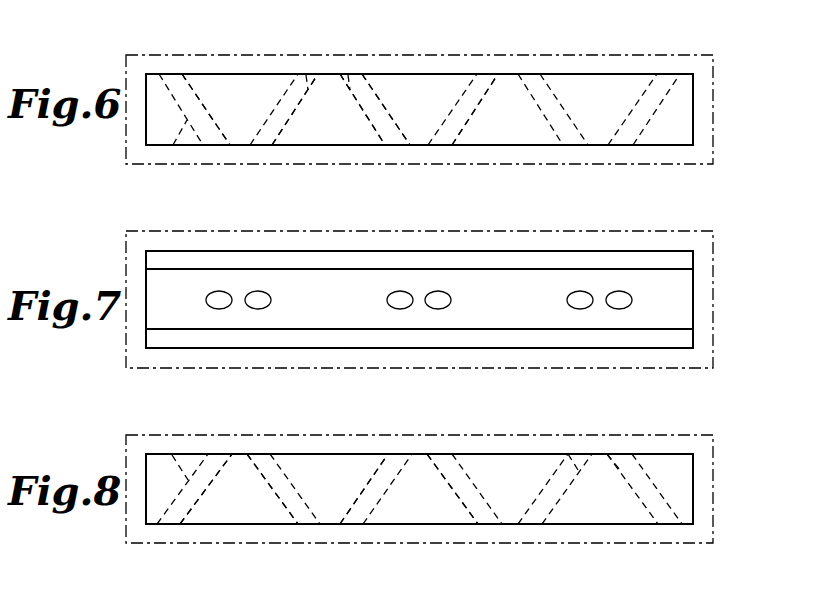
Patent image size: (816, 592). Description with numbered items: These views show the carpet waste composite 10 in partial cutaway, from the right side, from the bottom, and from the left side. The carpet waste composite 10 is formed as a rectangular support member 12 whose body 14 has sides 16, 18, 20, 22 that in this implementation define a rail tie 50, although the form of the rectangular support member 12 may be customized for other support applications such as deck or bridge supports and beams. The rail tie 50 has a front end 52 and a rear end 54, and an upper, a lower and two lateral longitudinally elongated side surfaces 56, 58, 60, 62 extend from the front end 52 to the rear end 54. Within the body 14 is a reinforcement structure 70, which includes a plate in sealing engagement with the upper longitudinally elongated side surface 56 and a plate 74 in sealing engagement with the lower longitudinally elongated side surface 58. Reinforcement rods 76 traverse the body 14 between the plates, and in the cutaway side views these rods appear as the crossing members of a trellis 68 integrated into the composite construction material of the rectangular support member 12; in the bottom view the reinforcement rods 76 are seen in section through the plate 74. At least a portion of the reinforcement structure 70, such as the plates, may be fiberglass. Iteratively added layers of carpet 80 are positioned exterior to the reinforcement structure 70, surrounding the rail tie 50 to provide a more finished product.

In FIG. 6, the carpet waste composite 10 is at (135, 48).
In FIG. 7, the carpet waste composite 10 is at (135, 225).
In FIG. 8, the carpet waste composite 10 is at (135, 428).
In FIG. 6, the rectangular support member 12 is at (698, 133).
In FIG. 7, the rectangular support member 12 is at (698, 318).
In FIG. 8, the rectangular support member 12 is at (698, 512).
In FIG. 6, the body 14 is at (146, 113).
In FIG. 7, the body 14 is at (146, 318).
In FIG. 8, the body 14 is at (146, 495).
In FIG. 6, the side 16 is at (494, 74).
In FIG. 8, the side 16 is at (262, 524).
In FIG. 7, the side 18 is at (567, 250).
In FIG. 8, the side 18 is at (205, 513).
In FIG. 6, the side 20 is at (291, 146).
In FIG. 7, the side 20 is at (363, 315).
In FIG. 8, the side 20 is at (345, 454).
In FIG. 6, the side 22 is at (447, 74).
In FIG. 7, the side 22 is at (350, 250).
In FIG. 6, the rail tie 50 is at (250, 72).
In FIG. 7, the rail tie 50 is at (430, 249).
In FIG. 8, the rail tie 50 is at (247, 452).
In FIG. 6, the front end 52 is at (695, 90).
In FIG. 7, the front end 52 is at (695, 278).
In FIG. 8, the front end 52 is at (695, 470).
In FIG. 6, the rear end 54 is at (146, 80).
In FIG. 7, the rear end 54 is at (146, 282).
In FIG. 8, the rear end 54 is at (146, 460).
In FIG. 6, the upper longitudinally elongated side surface 56 is at (507, 74).
In FIG. 8, the upper longitudinally elongated side surface 56 is at (313, 520).
In FIG. 6, the lower longitudinally elongated side surface 58 is at (240, 146).
In FIG. 7, the lower longitudinally elongated side surface 58 is at (378, 280).
In FIG. 8, the lower longitudinally elongated side surface 58 is at (420, 454).
In FIG. 7, the lateral longitudinally elongated side surface 60 is at (657, 240).
In FIG. 8, the lateral longitudinally elongated side surface 60 is at (236, 513).
In FIG. 6, the lateral longitudinally elongated side surface 62 is at (393, 74).
In FIG. 7, the lateral longitudinally elongated side surface 62 is at (327, 250).
In FIG. 6, the trellis 68 is at (173, 146).
In FIG. 8, the trellis 68 is at (172, 455).
In FIG. 7, the reinforcement structure 70 is at (315, 298).
In FIG. 7, the plate 74 is at (513, 298).
In FIG. 6, the reinforcement rods 76 is at (348, 75).
In FIG. 7, the reinforcement rods 76 is at (619, 300).
In FIG. 8, the reinforcement rods 76 is at (620, 455).
In FIG. 6, the layers of carpet 80 is at (713, 118).
In FIG. 7, the layers of carpet 80 is at (713, 305).
In FIG. 8, the layers of carpet 80 is at (713, 496).